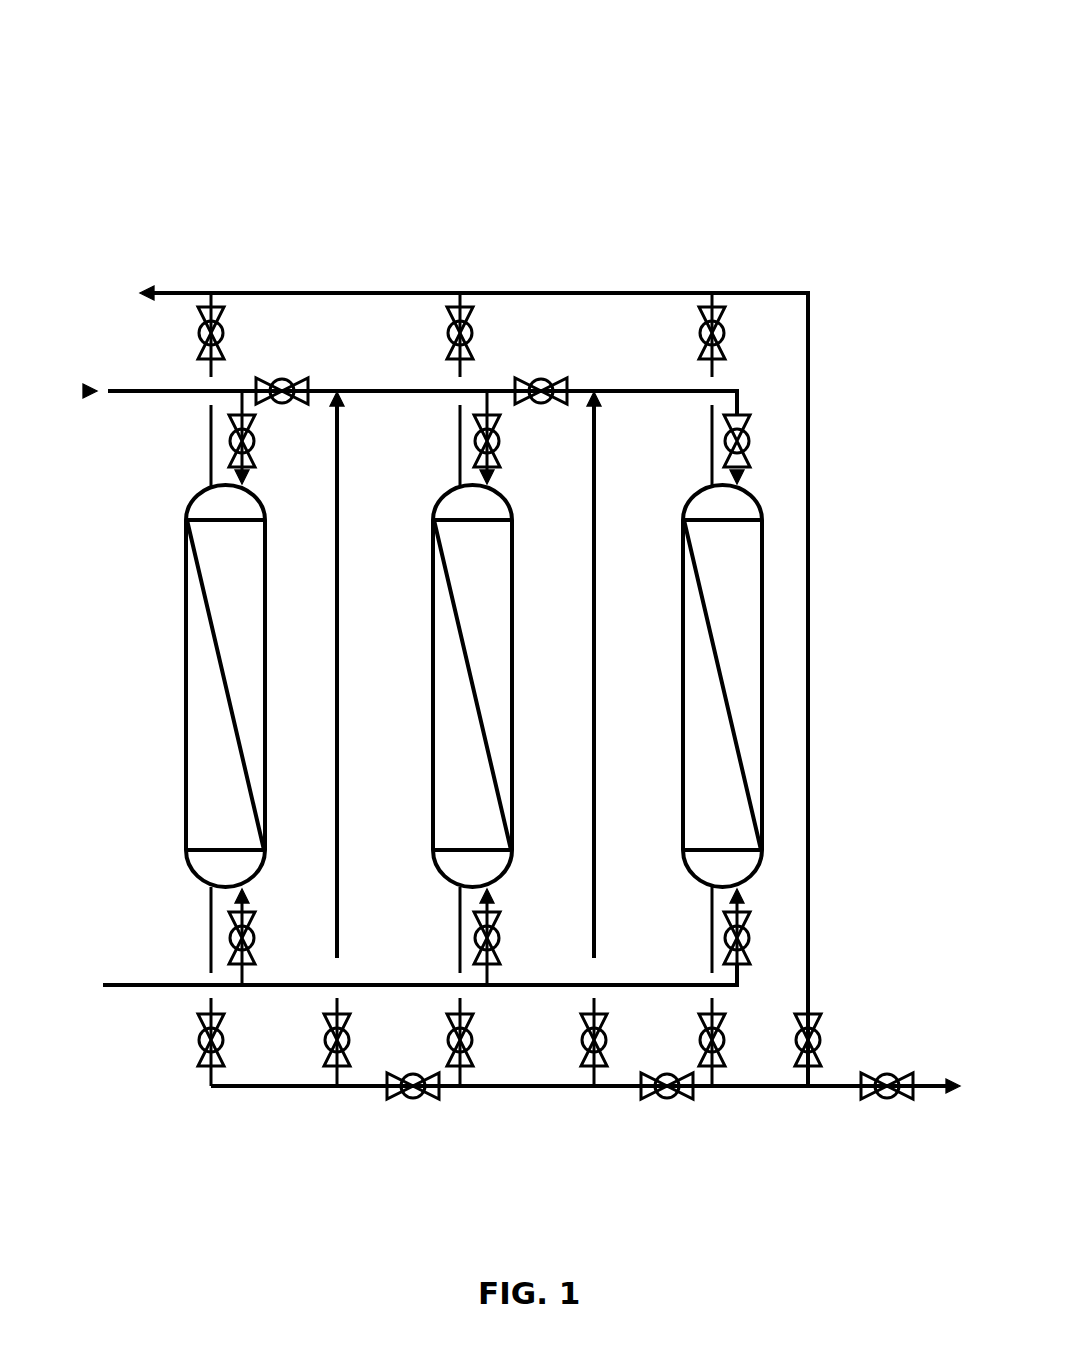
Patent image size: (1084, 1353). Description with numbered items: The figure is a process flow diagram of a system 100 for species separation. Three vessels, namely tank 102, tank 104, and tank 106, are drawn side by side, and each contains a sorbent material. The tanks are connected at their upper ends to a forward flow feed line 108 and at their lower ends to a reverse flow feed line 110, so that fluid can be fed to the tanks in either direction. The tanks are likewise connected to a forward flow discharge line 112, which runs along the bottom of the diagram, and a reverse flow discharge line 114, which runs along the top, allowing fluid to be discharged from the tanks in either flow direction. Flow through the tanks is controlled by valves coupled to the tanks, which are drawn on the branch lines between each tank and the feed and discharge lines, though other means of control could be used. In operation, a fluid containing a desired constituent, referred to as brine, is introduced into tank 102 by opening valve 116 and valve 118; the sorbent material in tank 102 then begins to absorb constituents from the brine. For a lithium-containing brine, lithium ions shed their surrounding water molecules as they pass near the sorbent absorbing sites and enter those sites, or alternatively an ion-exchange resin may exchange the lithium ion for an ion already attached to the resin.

The system 100 is at (445, 95).
The tank 102 is at (187, 556).
The tank 104 is at (432, 548).
The tank 106 is at (683, 548).
The forward flow feed line 108 is at (140, 388).
The reverse flow feed line 110 is at (157, 987).
The forward flow discharge line 112 is at (773, 1087).
The reverse flow discharge line 114 is at (563, 290).
The valve 116 is at (255, 440).
The valve 118 is at (200, 1038).